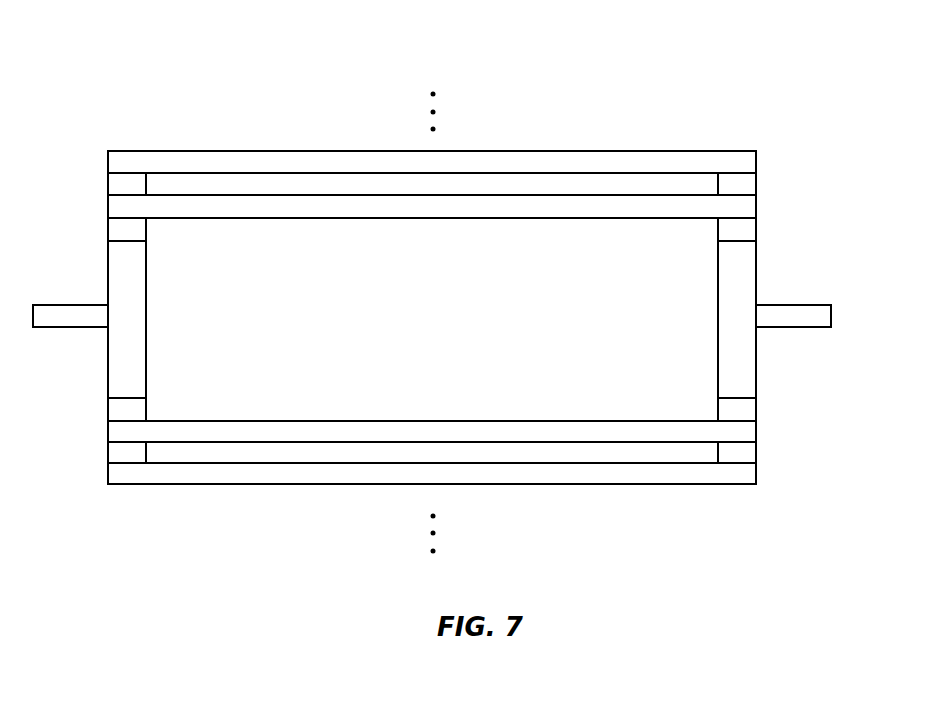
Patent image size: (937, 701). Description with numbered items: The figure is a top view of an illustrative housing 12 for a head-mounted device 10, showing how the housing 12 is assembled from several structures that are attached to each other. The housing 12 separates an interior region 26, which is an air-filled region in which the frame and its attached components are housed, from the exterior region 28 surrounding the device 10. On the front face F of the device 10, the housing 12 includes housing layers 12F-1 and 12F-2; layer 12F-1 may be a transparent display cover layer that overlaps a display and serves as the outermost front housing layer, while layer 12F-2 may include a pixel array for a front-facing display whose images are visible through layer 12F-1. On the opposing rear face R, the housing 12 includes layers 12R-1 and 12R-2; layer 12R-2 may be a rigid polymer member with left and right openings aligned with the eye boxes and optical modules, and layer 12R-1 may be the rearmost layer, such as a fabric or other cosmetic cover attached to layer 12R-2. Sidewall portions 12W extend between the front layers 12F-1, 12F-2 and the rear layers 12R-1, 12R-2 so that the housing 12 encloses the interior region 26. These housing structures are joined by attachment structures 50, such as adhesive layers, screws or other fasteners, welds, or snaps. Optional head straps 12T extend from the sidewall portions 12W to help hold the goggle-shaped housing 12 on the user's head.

The device 10 is at (819, 96).
The housing 12 is at (868, 152).
The layer 12F-1 is at (590, 210).
The layer 12F-2 is at (668, 168).
The layer 12R-1 is at (666, 472).
The layer 12R-2 is at (587, 430).
The sidewall portions 12W is at (117, 372).
The straps 12T is at (796, 320).
The interior region 26 is at (173, 268).
The exterior region 28 is at (214, 101).
The attachment structures 50 is at (108, 405).
The front face F is at (491, 77).
The rear face R is at (368, 497).